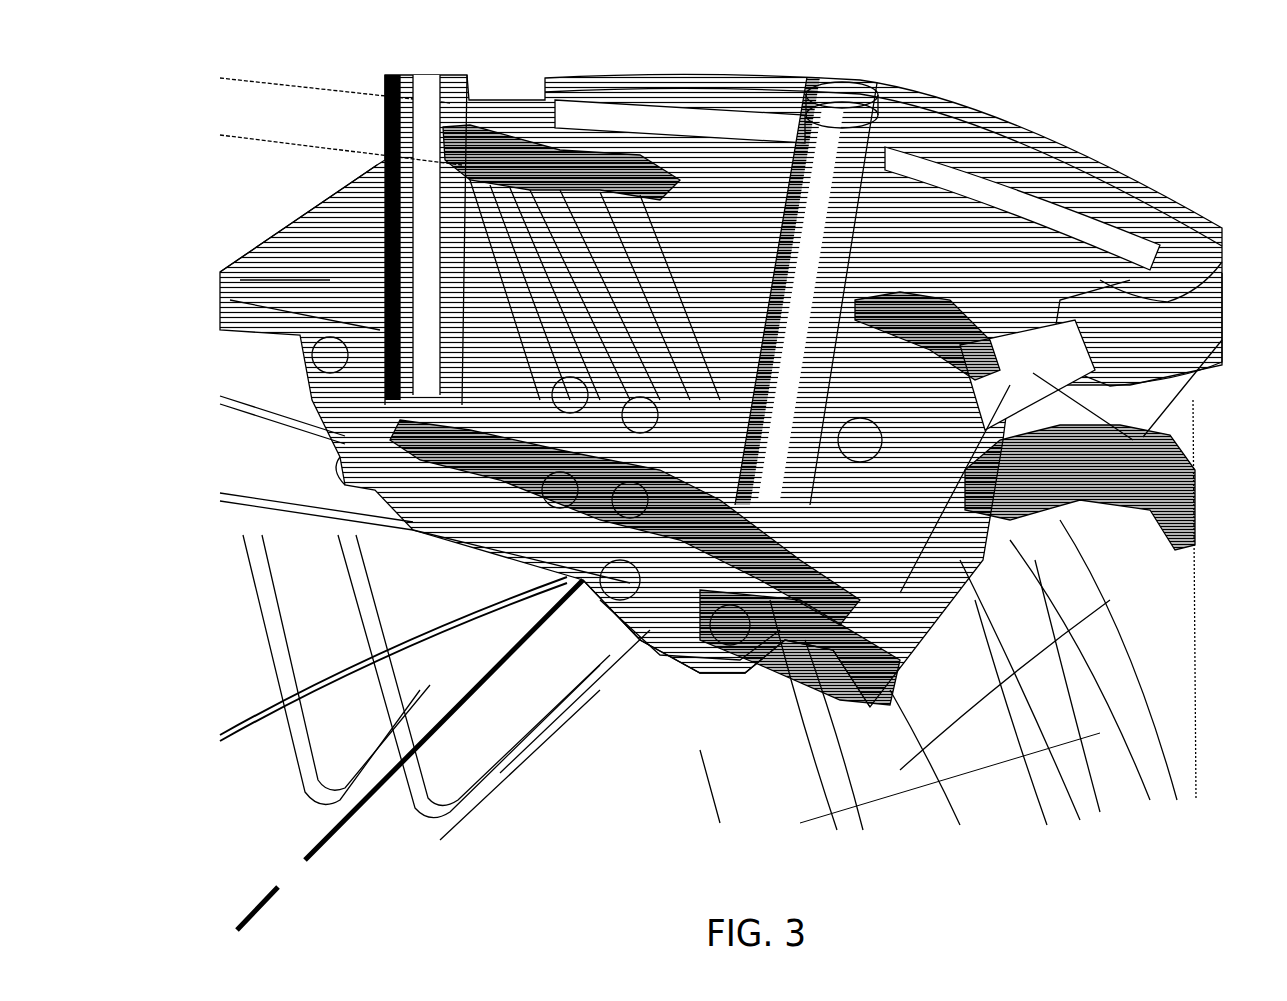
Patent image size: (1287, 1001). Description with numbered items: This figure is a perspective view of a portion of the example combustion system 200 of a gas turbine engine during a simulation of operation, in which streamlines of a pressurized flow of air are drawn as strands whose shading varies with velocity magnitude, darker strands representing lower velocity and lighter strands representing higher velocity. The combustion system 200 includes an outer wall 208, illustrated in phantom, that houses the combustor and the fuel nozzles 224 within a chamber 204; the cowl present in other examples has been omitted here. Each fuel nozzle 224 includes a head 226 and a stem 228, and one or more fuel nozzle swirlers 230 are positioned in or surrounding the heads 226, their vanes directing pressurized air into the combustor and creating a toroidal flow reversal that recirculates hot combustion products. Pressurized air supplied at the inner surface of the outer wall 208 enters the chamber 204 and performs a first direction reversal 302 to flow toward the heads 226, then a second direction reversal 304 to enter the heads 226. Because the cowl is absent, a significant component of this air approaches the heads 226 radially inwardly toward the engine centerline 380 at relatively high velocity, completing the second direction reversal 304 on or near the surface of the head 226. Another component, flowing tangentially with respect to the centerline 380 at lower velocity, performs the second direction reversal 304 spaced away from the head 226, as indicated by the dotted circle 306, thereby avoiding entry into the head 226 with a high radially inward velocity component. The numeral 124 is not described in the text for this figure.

The frame tube 124 is at (713, 65).
The combustion system 200 is at (1108, 102).
The chamber 204 is at (240, 237).
The outer wall 208 is at (347, 82).
The fuel nozzle 224 is at (447, 103).
The head 226 is at (346, 484).
The stem 228 is at (410, 212).
The fuel nozzle swirler 230 is at (368, 505).
The first direction reversal 302 is at (607, 154).
The second direction reversal 304 is at (383, 408).
The dotted circle 306 is at (695, 600).
The centerline 380 is at (283, 895).